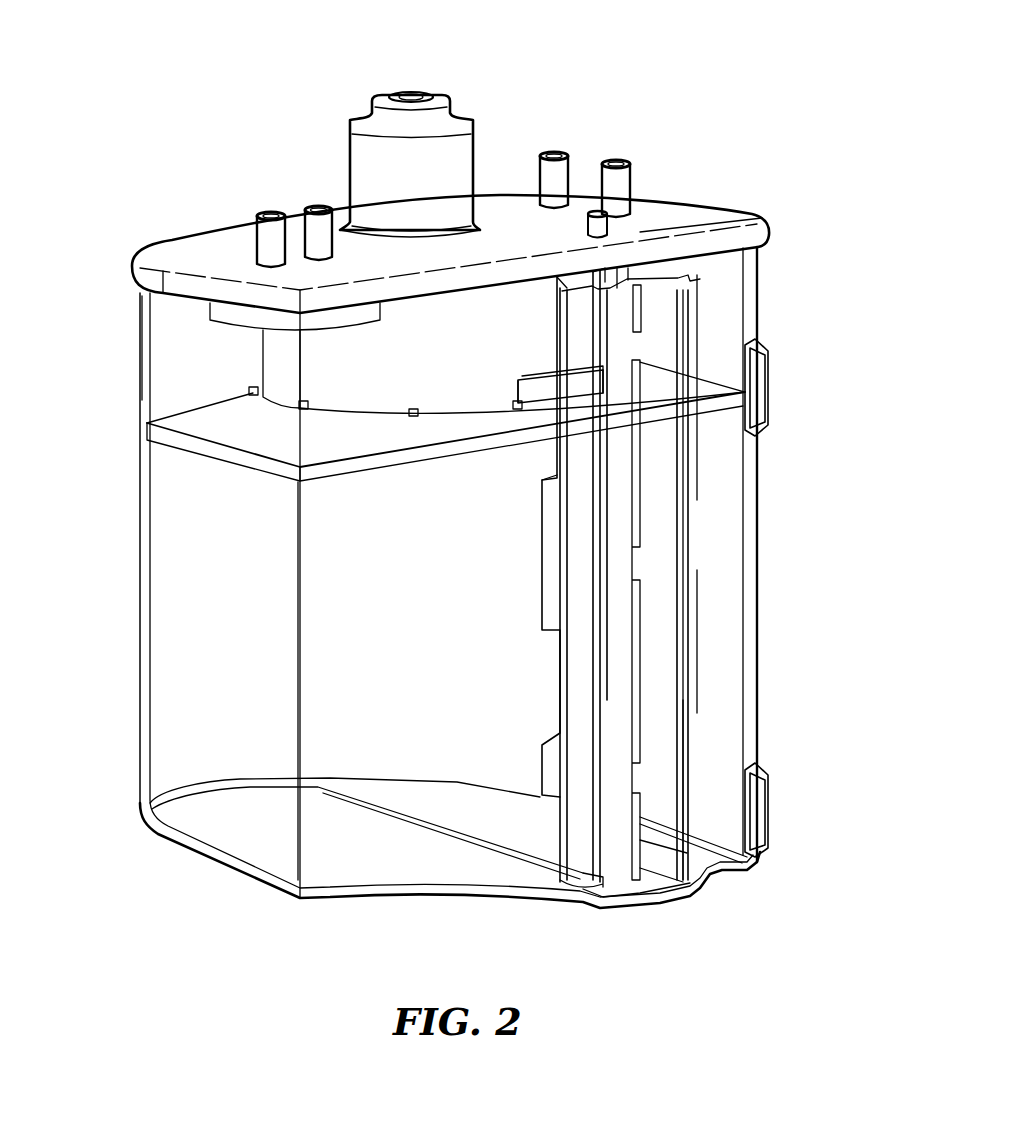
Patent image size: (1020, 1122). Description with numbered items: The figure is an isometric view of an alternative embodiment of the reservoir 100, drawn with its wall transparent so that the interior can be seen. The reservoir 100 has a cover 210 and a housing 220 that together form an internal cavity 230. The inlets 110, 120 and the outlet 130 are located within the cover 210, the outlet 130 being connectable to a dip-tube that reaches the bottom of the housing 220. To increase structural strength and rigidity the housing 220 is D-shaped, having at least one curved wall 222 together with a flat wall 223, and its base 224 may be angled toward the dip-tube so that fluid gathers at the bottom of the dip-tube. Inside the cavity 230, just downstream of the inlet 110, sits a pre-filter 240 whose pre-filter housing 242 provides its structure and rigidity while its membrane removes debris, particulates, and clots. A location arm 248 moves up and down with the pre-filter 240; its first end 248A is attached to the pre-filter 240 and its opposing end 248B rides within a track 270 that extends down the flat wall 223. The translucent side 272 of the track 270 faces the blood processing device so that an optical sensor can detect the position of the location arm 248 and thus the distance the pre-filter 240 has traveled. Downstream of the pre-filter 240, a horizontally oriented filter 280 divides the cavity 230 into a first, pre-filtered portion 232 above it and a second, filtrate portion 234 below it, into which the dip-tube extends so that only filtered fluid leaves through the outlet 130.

The reservoir 100 is at (199, 166).
The inlet 110 is at (408, 96).
The inlet 120 is at (317, 208).
The outlet 130 is at (616, 160).
The cover 210 is at (688, 216).
The housing 220 is at (140, 708).
The curved wall 222 is at (140, 322).
The flat wall 223 is at (341, 727).
The base 224 is at (530, 893).
The internal cavity 230 is at (200, 513).
The first portion (pre-filtered portion) 232 is at (200, 380).
The second portion (filtrate portion) 234 is at (283, 633).
The pre-filter 240 is at (497, 300).
The pre-filter housing 242 is at (517, 324).
The location arm 248 is at (557, 390).
The first end 248A is at (520, 393).
The opposing end 248B is at (600, 370).
The track 270 is at (590, 676).
The translucent side 272 is at (642, 560).
The filter 280 is at (622, 424).